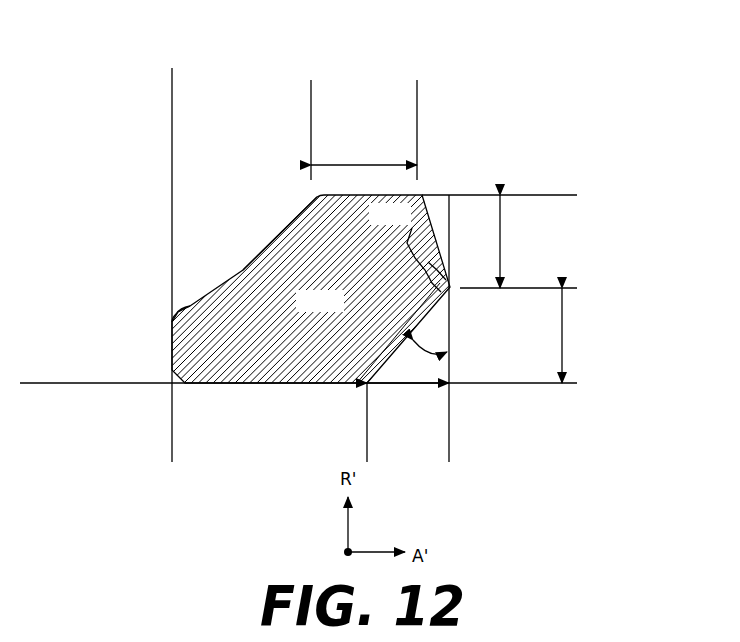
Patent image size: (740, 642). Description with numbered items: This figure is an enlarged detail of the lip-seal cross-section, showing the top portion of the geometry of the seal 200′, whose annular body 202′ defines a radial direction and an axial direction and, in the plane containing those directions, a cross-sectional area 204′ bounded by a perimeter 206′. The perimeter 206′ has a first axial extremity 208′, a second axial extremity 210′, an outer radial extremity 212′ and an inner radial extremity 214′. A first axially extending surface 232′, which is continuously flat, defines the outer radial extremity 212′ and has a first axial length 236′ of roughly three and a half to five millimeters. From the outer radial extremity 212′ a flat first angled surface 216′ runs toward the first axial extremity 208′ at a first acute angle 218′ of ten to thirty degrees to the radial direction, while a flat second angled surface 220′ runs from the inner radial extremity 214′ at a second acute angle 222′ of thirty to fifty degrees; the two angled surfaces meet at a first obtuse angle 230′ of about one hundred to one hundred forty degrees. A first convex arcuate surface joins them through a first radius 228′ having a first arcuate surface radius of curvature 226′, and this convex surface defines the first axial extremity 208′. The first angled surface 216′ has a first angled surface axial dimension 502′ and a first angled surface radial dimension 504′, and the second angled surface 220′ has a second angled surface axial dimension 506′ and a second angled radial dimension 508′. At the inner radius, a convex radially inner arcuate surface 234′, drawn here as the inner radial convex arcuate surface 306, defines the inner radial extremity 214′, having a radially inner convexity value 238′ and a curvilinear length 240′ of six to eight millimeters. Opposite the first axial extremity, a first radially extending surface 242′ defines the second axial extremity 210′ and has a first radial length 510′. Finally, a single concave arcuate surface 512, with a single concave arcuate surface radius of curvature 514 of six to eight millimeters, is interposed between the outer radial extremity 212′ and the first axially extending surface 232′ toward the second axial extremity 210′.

The seal 200′ is at (437, 60).
The annular body 202′ is at (490, 115).
The cross-sectional area 204′ is at (340, 311).
The perimeter 206′ is at (283, 232).
The first axial extremity 208′ is at (446, 282).
The second axial extremity 210′ is at (172, 345).
The outer radial extremity 212′ is at (347, 194).
The inner radial extremity 214′ is at (203, 385).
The first angled surface 216′ is at (447, 240).
The first acute angle 218′ is at (428, 196).
The second angled surface 220′ is at (398, 360).
The second acute angle 222′ is at (430, 350).
The first arcuate surface radius of curvature 226′ is at (440, 300).
The first radius 228′ is at (510, 288).
The first obtuse angle 230′ is at (407, 225).
The first axially extending surface 232′ is at (402, 195).
The radially inner arcuate surface 234′ is at (218, 385).
The first axial length 236′ is at (387, 192).
The radially inner convexity value 238′ is at (297, 386).
The curvilinear length 240′ is at (365, 385).
The first radially extending surface 242′ is at (190, 306).
The inner radial convex arcuate surface 306 is at (262, 385).
The first angled surface axial dimension 502′ is at (492, 195).
The first angled surface radial dimension 504′ is at (501, 230).
The second angled surface axial dimension 506′ is at (413, 385).
The second angled radial dimension 508′ is at (563, 335).
The first radial length 510′ is at (172, 358).
The single concave arcuate surface 512 is at (257, 258).
The single concave arcuate surface radius of curvature 514 is at (243, 270).